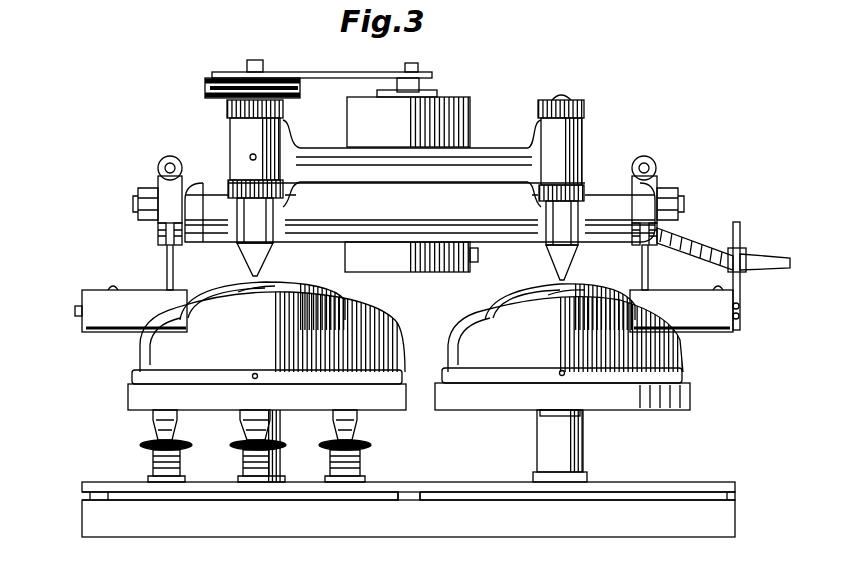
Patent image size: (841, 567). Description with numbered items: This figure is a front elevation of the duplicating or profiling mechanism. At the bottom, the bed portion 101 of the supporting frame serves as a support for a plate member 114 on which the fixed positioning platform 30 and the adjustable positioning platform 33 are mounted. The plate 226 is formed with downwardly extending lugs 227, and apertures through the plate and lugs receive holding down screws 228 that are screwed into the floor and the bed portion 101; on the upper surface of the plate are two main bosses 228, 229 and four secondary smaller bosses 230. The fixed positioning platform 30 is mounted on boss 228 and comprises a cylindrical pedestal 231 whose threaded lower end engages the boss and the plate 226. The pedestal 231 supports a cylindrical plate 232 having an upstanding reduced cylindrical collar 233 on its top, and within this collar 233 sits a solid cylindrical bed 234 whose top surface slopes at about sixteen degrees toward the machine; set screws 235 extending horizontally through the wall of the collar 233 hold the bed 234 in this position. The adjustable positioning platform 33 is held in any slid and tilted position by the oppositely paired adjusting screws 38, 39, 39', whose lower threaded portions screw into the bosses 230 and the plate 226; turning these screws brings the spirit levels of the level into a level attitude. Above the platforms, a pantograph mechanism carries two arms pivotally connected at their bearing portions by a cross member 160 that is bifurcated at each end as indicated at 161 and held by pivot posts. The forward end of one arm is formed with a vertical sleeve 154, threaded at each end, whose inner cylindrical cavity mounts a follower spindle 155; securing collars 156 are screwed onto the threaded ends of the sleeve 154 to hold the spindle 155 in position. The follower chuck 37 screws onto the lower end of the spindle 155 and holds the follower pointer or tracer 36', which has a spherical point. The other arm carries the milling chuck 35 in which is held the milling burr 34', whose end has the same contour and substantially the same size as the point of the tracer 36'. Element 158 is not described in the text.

The fixed positioning platform 30 is at (664, 312).
The adjustable positioning platform 33 is at (368, 325).
The milling burr 34' is at (273, 275).
The milling chuck 35 is at (236, 278).
The follower pointer 36' is at (575, 278).
The follower chuck 37 is at (556, 283).
The adjusting screw 38 is at (284, 450).
The adjusting screw 39 is at (354, 430).
The adjusting screw 39' is at (150, 430).
The bed portion 101 is at (456, 538).
The plate member 114 is at (430, 493).
The vertical sleeve 154 is at (582, 152).
The follower spindle 155 is at (568, 97).
The securing collar 156 is at (584, 108).
The left spindle head 158 is at (233, 145).
The cross member 160 is at (336, 147).
The bifurcated end 161 is at (289, 130).
The plate 226 is at (82, 490).
The lug 227 is at (82, 496).
The main boss 228 is at (588, 478).
The main boss 229 is at (284, 480).
The secondary boss 230 is at (181, 477).
The cylindrical pedestal 231 is at (585, 452).
The cylindrical plate 232 is at (692, 400).
The upstanding collar 233 is at (686, 380).
The solid cylindrical bed 234 is at (690, 357).
The set screw 235 is at (561, 370).